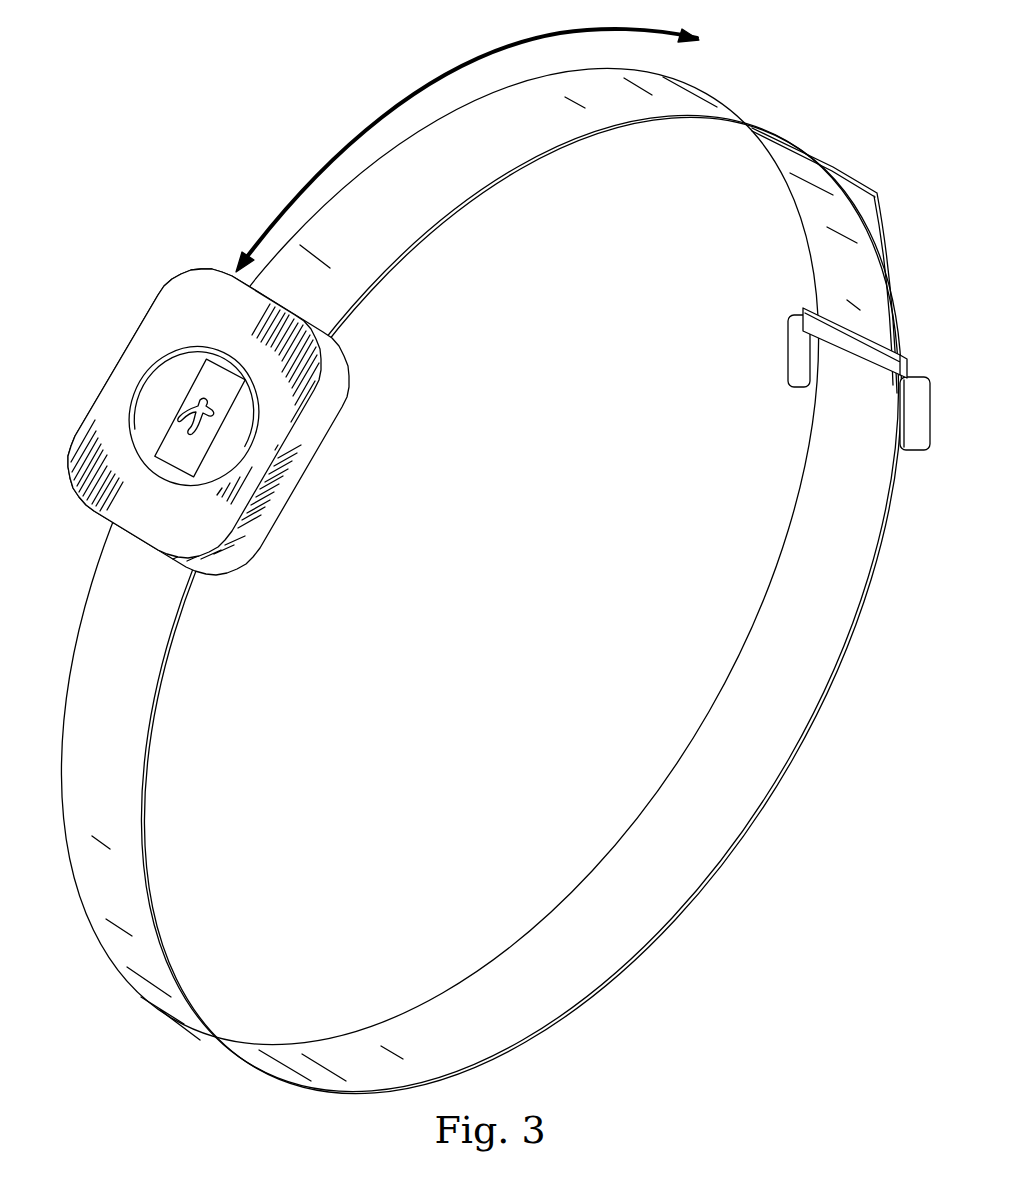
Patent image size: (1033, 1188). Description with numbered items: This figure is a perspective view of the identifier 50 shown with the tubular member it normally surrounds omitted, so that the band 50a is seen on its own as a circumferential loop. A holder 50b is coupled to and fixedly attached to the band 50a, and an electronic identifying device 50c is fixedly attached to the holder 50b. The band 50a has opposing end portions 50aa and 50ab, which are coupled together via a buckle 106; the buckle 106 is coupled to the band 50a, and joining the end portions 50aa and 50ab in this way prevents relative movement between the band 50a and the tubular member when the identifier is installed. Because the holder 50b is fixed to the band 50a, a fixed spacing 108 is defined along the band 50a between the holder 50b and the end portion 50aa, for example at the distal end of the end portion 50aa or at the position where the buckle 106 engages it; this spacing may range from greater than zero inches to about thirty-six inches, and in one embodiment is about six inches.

The identifier 50 is at (208, 390).
The band 50a is at (126, 819).
The end portion 50aa is at (822, 250).
The end portion 50ab is at (887, 210).
The holder 50b is at (240, 512).
The electronic identifying device 50c is at (190, 410).
The buckle 106 is at (792, 340).
The fixed spacing 108 is at (402, 110).